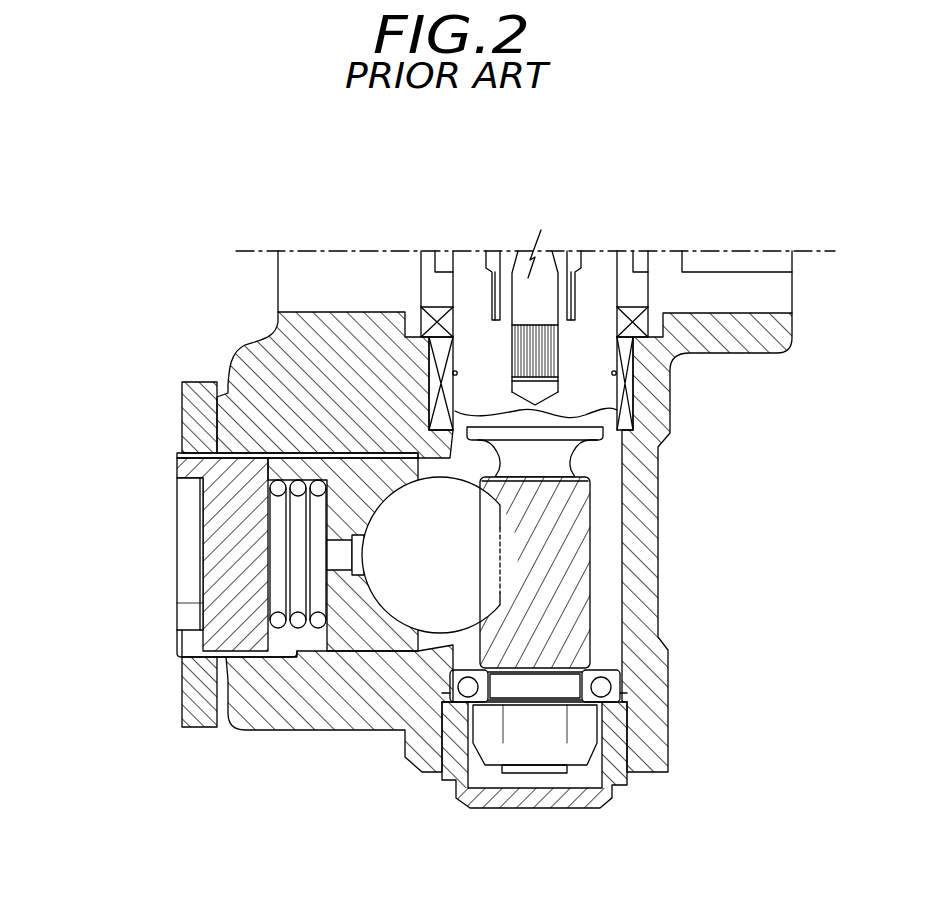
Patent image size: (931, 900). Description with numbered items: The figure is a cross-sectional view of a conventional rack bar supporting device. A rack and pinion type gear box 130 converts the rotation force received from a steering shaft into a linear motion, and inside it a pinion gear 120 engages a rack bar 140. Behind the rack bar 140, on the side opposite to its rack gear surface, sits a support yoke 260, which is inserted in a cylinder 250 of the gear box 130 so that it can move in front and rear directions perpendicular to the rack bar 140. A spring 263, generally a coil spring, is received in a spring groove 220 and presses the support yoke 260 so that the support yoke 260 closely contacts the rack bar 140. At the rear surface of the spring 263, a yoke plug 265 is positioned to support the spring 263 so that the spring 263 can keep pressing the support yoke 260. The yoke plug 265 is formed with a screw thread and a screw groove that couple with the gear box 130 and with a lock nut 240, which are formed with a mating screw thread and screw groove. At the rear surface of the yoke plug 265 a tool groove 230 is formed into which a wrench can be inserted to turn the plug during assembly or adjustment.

The pinion gear 120 is at (572, 550).
The rack and pinion type gear box 130 is at (247, 353).
The rack bar 140 is at (450, 582).
The spring groove 220 is at (305, 630).
The tool groove 230 is at (185, 585).
The lock nut 240 is at (187, 691).
The cylinder 250 is at (357, 650).
The support yoke 260 is at (377, 462).
The spring 263 is at (277, 478).
The yoke plug 265 is at (200, 466).